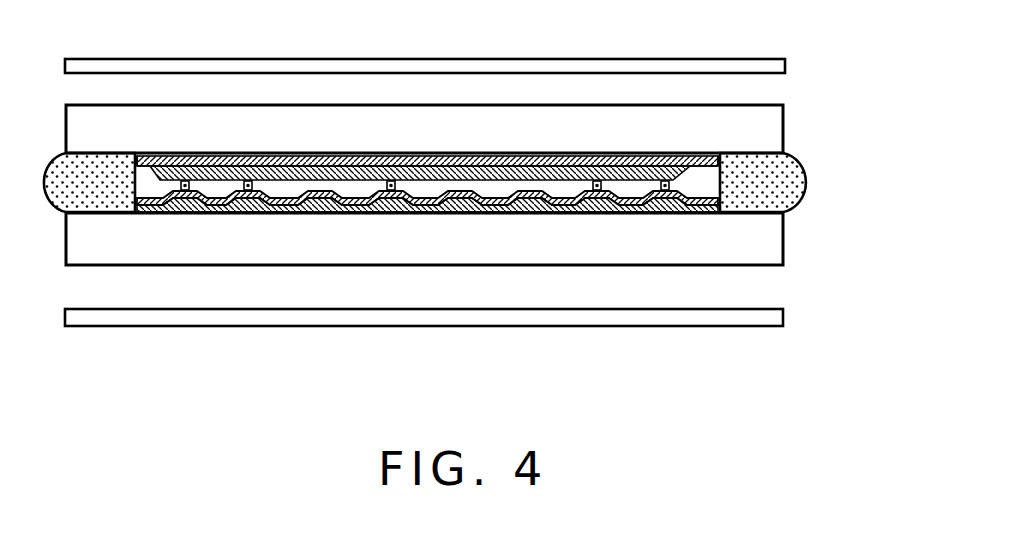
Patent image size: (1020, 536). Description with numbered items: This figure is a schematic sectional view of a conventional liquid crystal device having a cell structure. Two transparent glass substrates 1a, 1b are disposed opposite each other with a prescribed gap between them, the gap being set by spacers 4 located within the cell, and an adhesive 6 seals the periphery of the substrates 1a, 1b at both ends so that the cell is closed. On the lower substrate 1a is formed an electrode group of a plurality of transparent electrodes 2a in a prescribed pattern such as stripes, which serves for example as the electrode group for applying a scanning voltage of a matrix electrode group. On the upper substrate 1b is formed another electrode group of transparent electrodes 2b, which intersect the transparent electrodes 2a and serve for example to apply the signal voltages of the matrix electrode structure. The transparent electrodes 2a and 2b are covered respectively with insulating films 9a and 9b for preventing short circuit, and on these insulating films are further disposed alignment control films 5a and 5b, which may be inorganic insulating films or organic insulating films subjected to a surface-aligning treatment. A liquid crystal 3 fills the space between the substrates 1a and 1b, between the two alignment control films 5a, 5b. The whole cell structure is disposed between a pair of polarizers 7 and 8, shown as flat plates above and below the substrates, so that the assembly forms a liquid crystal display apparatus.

The transparent glass substrate 1a is at (766, 245).
The transparent glass substrate 1b is at (771, 140).
The transparent electrodes 2a is at (185, 213).
The transparent electrodes 2b is at (483, 158).
The liquid crystal 3 is at (278, 190).
The spacers 4 is at (185, 181).
The alignment control film 5a is at (490, 213).
The alignment control film 5b is at (371, 166).
The adhesive 6 is at (60, 190).
The polarizer 7 is at (786, 318).
The polarizer 8 is at (789, 62).
The insulating film 9a is at (683, 213).
The insulating film 9b is at (676, 166).